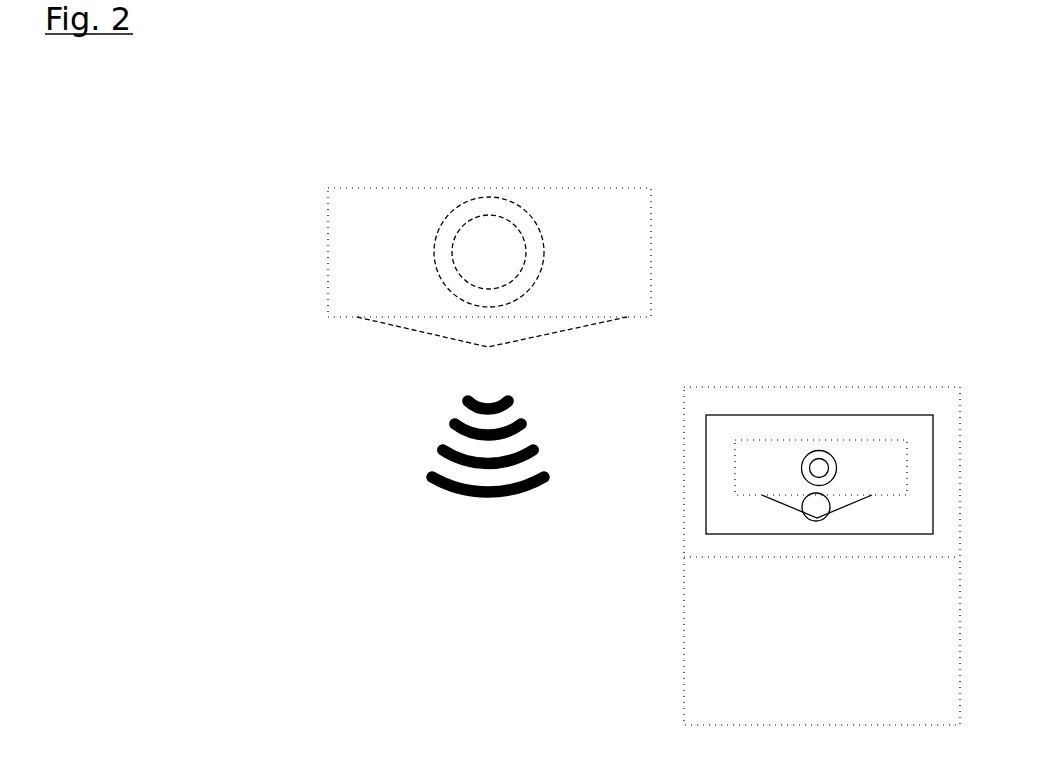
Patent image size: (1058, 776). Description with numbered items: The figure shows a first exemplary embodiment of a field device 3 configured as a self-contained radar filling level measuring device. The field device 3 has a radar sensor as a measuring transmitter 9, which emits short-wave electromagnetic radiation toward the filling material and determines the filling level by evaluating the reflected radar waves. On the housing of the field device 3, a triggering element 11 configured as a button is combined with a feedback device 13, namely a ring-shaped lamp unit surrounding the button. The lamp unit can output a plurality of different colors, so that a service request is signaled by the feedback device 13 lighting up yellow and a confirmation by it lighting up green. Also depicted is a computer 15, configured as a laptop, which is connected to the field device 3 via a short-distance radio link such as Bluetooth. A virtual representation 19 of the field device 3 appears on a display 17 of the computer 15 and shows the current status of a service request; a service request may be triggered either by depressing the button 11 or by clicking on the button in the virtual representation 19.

The field device 3 is at (618, 230).
The measuring transmitter 9 is at (465, 329).
The triggering element 11 is at (490, 248).
The feedback device 13 is at (447, 235).
The computer 15 is at (693, 617).
The display 17 is at (715, 515).
The virtual representation 19 is at (775, 446).